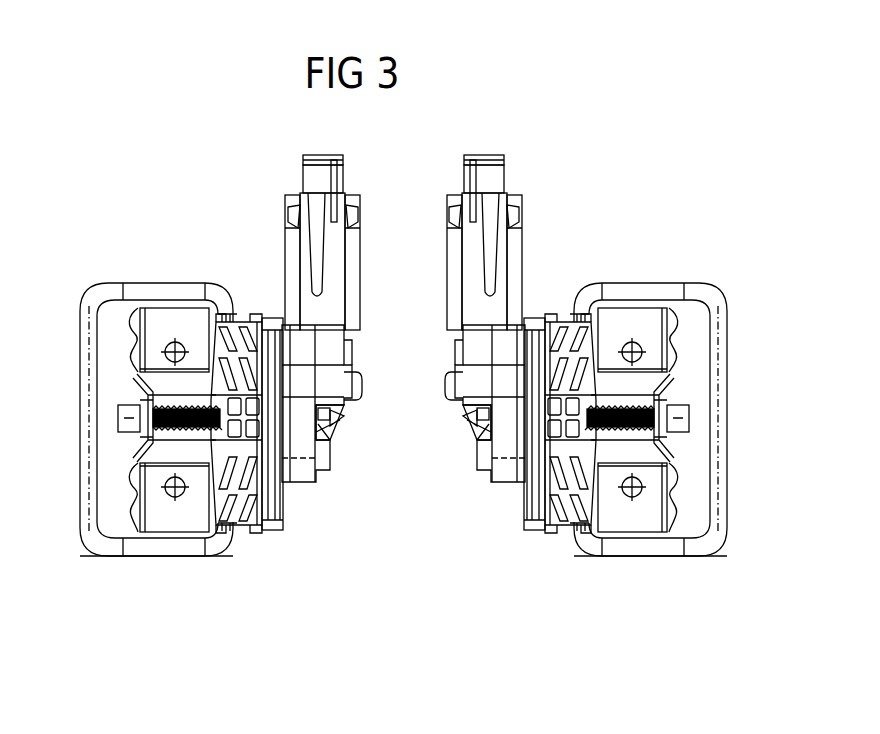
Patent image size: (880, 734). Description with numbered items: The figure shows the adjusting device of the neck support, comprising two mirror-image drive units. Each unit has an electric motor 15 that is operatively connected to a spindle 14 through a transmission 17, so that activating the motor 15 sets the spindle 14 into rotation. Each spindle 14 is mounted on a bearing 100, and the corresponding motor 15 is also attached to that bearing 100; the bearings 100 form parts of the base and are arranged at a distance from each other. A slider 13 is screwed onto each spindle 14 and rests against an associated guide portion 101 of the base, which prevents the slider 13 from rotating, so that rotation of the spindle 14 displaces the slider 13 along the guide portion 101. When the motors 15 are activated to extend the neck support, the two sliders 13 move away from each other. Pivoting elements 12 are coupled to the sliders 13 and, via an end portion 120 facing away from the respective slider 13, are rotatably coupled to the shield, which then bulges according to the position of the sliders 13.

The pivoting element 12 is at (108, 558).
The end portion 120 is at (80, 500).
The guide portion 101 is at (167, 320).
The spindle 14 is at (196, 432).
The slider 13 is at (250, 524).
The bearing 100 is at (274, 524).
The motor 15 is at (290, 262).
The transmission 17 is at (455, 414).